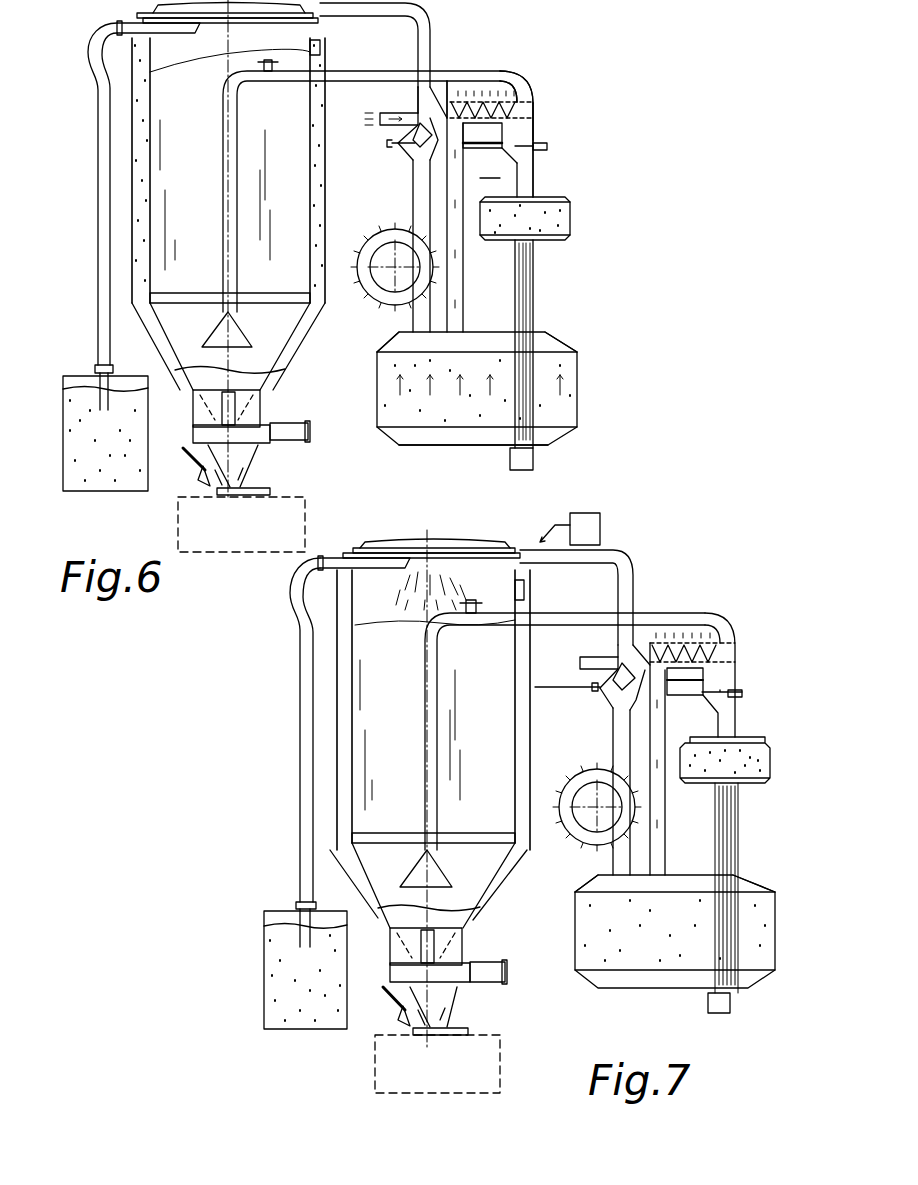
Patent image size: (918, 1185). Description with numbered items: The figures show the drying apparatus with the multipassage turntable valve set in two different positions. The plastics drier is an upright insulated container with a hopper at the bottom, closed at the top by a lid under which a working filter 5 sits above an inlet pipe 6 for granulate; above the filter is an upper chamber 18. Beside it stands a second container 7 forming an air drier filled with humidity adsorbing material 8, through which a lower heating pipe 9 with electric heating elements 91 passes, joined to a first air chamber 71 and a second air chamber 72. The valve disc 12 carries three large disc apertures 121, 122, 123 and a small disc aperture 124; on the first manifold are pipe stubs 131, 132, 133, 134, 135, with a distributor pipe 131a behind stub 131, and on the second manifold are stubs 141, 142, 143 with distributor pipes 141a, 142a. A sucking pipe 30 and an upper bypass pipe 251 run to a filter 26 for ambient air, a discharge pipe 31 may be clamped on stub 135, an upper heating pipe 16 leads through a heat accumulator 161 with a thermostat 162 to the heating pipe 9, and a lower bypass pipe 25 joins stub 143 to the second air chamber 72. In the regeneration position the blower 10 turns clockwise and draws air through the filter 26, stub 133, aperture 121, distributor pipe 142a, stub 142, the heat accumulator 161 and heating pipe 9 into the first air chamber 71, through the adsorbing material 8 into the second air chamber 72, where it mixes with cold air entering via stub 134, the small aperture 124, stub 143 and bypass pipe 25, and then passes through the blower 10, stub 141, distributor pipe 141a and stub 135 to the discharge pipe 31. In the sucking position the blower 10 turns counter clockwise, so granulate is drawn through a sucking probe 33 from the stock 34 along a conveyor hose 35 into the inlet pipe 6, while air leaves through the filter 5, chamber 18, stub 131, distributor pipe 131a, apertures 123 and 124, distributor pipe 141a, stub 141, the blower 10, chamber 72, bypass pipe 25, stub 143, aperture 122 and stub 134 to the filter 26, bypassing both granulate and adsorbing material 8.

In FIG. 7, the working filter 5 is at (445, 548).
In FIG. 7, the inlet pipe 6 is at (372, 560).
In FIG. 6, the second container 7 is at (377, 378).
In FIG. 6, the humidity adsorbing material 8 is at (385, 410).
In FIG. 7, the humidity adsorbing material 8 is at (590, 945).
In FIG. 6, the lower heating pipe 9 is at (534, 275).
In FIG. 6, the blower 10 is at (372, 252).
In FIG. 7, the blower 10 is at (566, 835).
In FIG. 6, the valve disc 12 is at (560, 160).
In FIG. 6, the upper heating pipe 16 is at (572, 200).
In FIG. 7, the upper chamber 18 is at (520, 548).
In FIG. 6, the lower bypass pipe 25 is at (460, 285).
In FIG. 7, the lower bypass pipe 25 is at (660, 808).
In FIG. 6, the filter 26 is at (505, 100).
In FIG. 7, the filter 26 is at (700, 648).
In FIG. 6, the sucking pipe 30 is at (505, 130).
In FIG. 7, the sucking pipe 30 is at (710, 680).
In FIG. 6, the discharge pipe 31 is at (372, 113).
In FIG. 7, the sucking probe 33 is at (300, 930).
In FIG. 7, the stock 34 is at (265, 990).
In FIG. 7, the conveyor hose 35 is at (300, 740).
In FIG. 6, the first air chamber 71 is at (453, 448).
In FIG. 6, the second air chamber 72 is at (400, 338).
In FIG. 7, the second air chamber 72 is at (598, 880).
In FIG. 6, the electric heating elements 91 is at (525, 300).
In FIG. 6, the disc aperture 121 is at (548, 146).
In FIG. 7, the disc aperture 122 is at (705, 700).
In FIG. 7, the disc aperture 123 is at (597, 686).
In FIG. 6, the small disc aperture 124 is at (515, 110).
In FIG. 7, the small disc aperture 124 is at (615, 700).
In FIG. 7, the pipe stub 131 is at (612, 652).
In FIG. 7, the distributor pipe 131a is at (580, 661).
In FIG. 6, the pipe stub 132 is at (418, 150).
In FIG. 6, the pipe stub 133 is at (512, 140).
In FIG. 6, the pipe stub 134 is at (447, 118).
In FIG. 7, the pipe stub 134 is at (705, 668).
In FIG. 6, the pipe stub 135 is at (418, 118).
In FIG. 6, the pipe stub 141 is at (422, 178).
In FIG. 6, the distributor pipe 141a is at (422, 160).
In FIG. 7, the distributor pipe 141a is at (640, 705).
In FIG. 6, the pipe stub 142 is at (540, 172).
In FIG. 6, the distributor pipe 142a is at (515, 168).
In FIG. 6, the pipe stub 143 is at (448, 180).
In FIG. 7, the pipe stub 143 is at (755, 745).
In FIG. 6, the heat accumulator 161 is at (570, 225).
In FIG. 6, the thermostat 162 is at (570, 207).
In FIG. 6, the upper bypass pipe 251 is at (478, 110).
In FIG. 7, the upper bypass pipe 251 is at (650, 660).